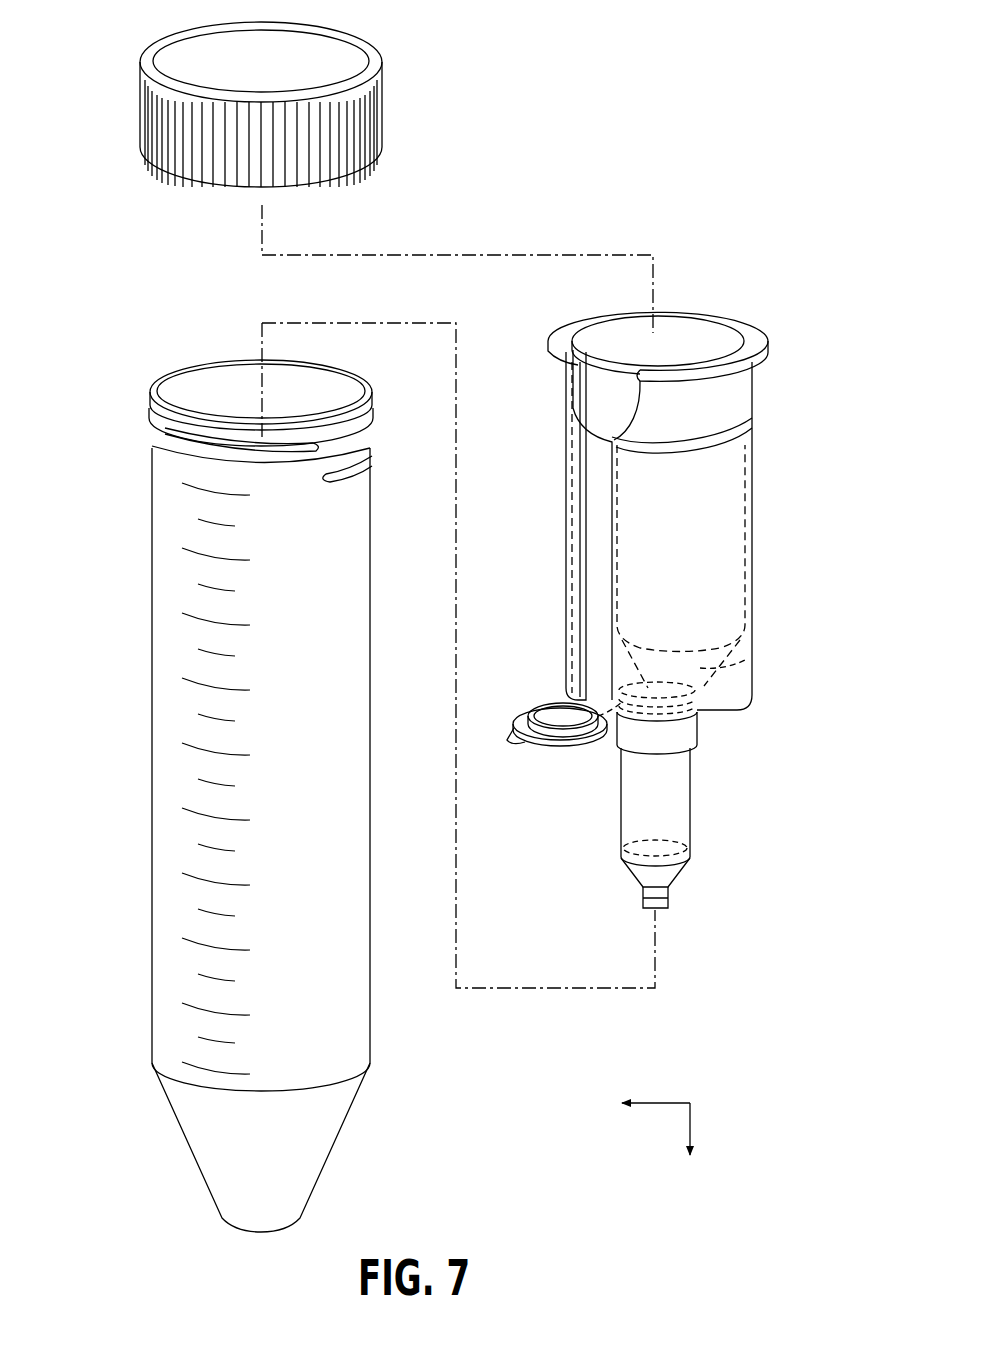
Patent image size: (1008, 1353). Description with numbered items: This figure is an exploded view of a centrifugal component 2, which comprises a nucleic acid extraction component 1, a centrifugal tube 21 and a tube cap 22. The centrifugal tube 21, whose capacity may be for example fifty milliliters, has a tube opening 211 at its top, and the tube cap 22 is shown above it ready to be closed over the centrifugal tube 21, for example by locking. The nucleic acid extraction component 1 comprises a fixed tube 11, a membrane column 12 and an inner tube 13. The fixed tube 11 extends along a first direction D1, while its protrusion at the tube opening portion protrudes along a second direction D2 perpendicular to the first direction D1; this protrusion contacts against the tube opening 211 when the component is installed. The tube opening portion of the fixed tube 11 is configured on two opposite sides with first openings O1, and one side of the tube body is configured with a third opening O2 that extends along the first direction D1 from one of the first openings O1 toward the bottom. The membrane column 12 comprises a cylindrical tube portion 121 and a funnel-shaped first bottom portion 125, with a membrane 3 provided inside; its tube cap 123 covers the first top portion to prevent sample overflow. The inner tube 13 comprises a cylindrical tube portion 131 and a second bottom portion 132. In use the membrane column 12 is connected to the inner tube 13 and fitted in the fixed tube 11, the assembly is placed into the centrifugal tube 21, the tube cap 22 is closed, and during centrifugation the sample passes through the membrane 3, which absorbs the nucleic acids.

The nucleic acid extraction component 1 is at (826, 756).
The centrifugal component 2 is at (612, 55).
The membrane 3 is at (668, 848).
The fixed tube 11 is at (653, 478).
The membrane column 12 is at (663, 783).
The inner tube 13 is at (646, 317).
The centrifugal tube 21 is at (217, 775).
The tube cap 22 is at (160, 45).
The cylindrical tube portion 121 is at (689, 786).
The tube cap 123 is at (553, 703).
The first bottom portion 125 is at (670, 874).
The cylindrical tube portion 131 is at (722, 589).
The second bottom portion 132 is at (730, 660).
The tube opening 211 is at (178, 375).
The first openings O1 is at (702, 303).
The third opening O2 is at (586, 534).
The first direction D1 is at (686, 1144).
The second direction D2 is at (642, 1102).